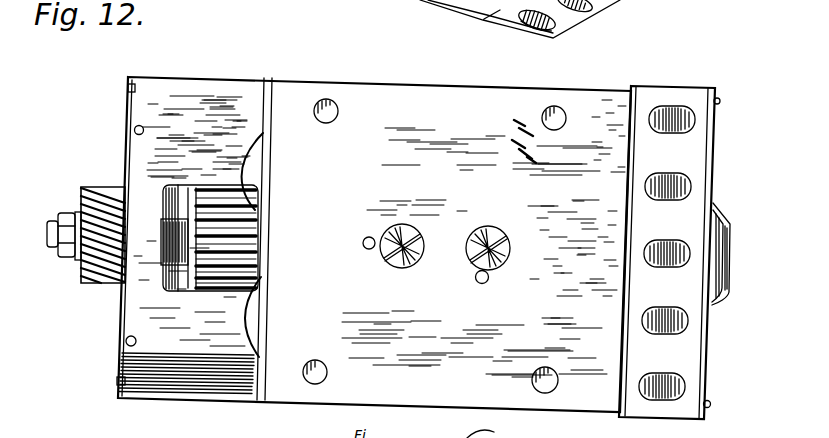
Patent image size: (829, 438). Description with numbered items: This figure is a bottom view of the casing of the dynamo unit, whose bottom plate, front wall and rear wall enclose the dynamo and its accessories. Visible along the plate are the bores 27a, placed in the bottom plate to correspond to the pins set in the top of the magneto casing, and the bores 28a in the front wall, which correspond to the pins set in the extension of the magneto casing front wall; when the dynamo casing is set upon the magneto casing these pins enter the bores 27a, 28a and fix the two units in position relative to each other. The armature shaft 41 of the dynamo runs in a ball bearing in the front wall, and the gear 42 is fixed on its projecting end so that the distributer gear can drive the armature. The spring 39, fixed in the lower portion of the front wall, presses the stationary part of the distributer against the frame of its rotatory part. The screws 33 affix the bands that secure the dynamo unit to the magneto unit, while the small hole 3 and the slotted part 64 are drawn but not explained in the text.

The small aperture in plate 3 is at (498, 285).
The bores 27a is at (334, 121).
The bores 28a is at (143, 130).
The screws 33 is at (730, 261).
The spring 39 is at (249, 160).
The armature shaft 41 is at (159, 240).
The gear 42 is at (110, 283).
The slotted bracket plate 64 is at (669, 252).